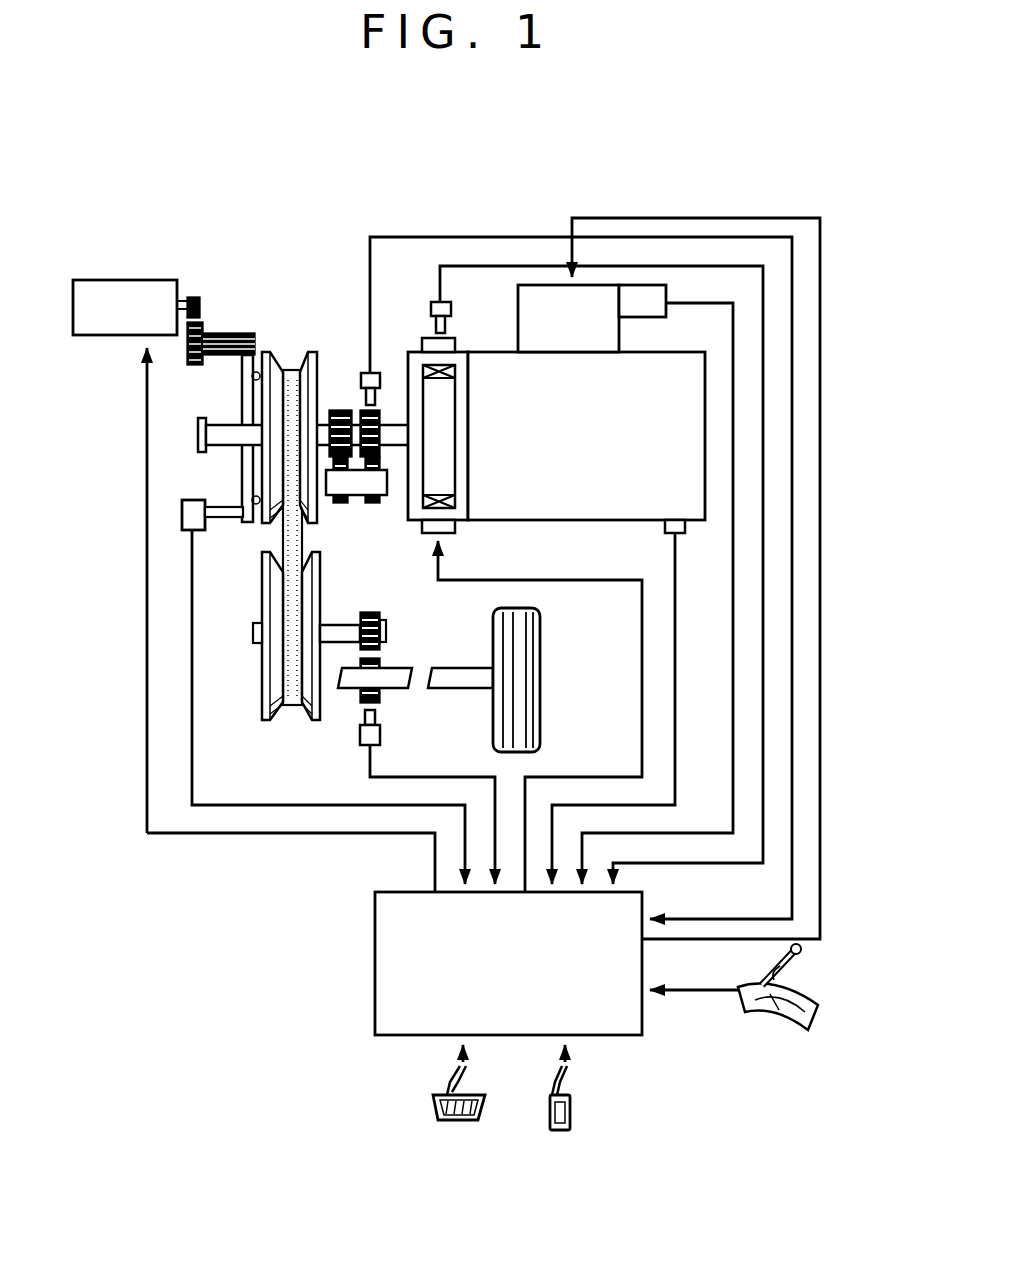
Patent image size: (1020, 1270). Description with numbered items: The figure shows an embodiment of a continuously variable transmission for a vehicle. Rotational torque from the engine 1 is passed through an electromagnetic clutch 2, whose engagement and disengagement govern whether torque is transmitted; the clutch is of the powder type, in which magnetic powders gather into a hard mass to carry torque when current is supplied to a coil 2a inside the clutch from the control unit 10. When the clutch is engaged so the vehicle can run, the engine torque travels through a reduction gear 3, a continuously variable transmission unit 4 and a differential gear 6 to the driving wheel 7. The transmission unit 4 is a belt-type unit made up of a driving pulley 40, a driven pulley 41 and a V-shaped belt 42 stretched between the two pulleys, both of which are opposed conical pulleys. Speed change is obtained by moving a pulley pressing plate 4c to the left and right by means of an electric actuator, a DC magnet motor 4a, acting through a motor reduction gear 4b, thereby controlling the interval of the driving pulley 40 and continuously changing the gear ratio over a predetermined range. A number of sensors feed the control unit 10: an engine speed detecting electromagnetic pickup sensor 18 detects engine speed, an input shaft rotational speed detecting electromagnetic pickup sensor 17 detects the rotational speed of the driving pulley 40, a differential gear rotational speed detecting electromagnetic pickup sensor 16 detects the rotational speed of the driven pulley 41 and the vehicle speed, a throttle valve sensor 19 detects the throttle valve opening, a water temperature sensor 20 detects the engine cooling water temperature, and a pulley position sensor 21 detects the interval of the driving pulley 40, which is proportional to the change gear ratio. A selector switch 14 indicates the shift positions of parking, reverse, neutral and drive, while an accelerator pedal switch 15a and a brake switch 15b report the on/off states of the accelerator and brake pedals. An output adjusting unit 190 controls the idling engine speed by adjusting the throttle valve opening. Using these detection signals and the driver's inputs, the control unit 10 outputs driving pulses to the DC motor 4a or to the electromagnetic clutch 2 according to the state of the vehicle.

The engine 1 is at (573, 520).
The electromagnetic clutch 2 is at (461, 440).
The coil 2a is at (450, 362).
The reduction gear 3 is at (358, 508).
The continuously variable transmission unit 4 is at (272, 501).
The DC magnet motor 4a is at (160, 282).
The motor reduction gear 4b is at (233, 333).
The pulley pressing plate 4c is at (244, 400).
The differential gear 6 is at (394, 633).
The driving wheel 7 is at (540, 737).
The control unit 10 is at (376, 1004).
The selector switch 14 is at (757, 1003).
The accelerator pedal switch 15a is at (575, 1112).
The brake switch 15b is at (433, 1108).
The differential gear rotational speed detecting electromagnetic pickup sensor 16 is at (360, 735).
The input shaft rotational speed detecting electromagnetic pickup sensor 17 is at (372, 372).
The engine speed detecting electromagnetic pickup sensor 18 is at (452, 309).
The throttle valve sensor 19 is at (645, 305).
The water temperature sensor 20 is at (665, 528).
The pulley position sensor 21 is at (187, 500).
The driving pulley 40 is at (312, 352).
The driven pulley 41 is at (262, 595).
The V-shaped belt 42 is at (282, 550).
The output adjusting unit 190 is at (540, 285).